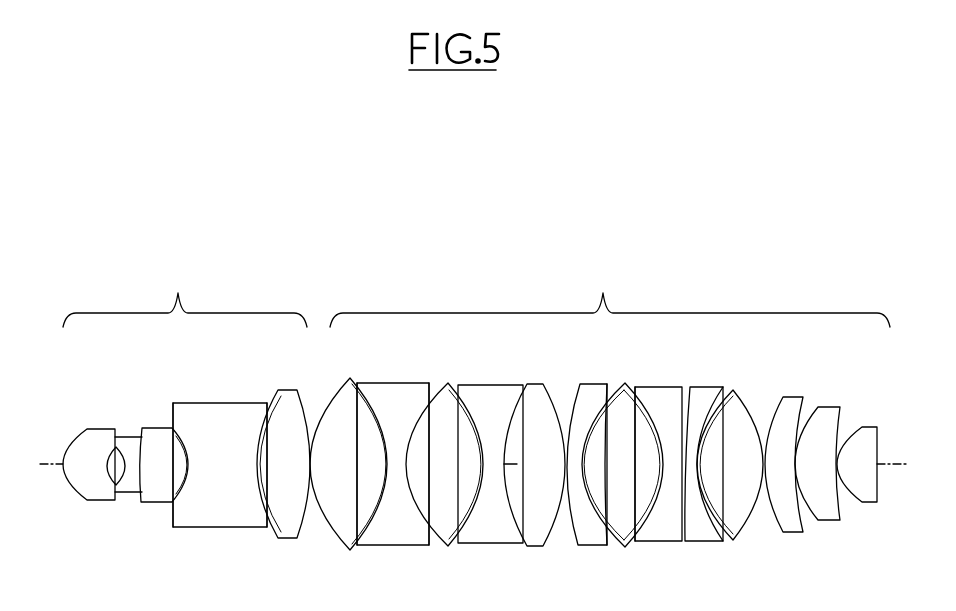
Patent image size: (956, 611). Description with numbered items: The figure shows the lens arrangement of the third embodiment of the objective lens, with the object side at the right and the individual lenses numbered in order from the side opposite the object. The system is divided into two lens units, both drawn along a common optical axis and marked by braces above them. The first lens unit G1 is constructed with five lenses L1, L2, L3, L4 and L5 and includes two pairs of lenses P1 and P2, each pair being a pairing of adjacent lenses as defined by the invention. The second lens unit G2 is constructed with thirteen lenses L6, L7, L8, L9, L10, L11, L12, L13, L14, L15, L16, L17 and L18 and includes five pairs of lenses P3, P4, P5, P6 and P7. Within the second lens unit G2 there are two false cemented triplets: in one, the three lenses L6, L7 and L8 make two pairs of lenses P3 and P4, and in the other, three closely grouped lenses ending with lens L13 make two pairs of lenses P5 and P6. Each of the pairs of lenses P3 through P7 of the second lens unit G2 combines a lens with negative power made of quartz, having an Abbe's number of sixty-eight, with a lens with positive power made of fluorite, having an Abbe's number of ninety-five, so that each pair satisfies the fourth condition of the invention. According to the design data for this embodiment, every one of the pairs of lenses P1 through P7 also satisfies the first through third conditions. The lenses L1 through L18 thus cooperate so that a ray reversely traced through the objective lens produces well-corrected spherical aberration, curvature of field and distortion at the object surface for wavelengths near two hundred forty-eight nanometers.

The first lens unit G1 is at (185, 297).
The second lens unit G2 is at (610, 297).
The lens L1 is at (82, 440).
The lens L2 is at (124, 442).
The lens L3 is at (153, 438).
The lens L4 is at (217, 412).
The lens L5 is at (287, 402).
The lens L6 is at (338, 400).
The lens L7 is at (395, 392).
The lens L8 is at (443, 393).
The lens L9 is at (493, 392).
The lens L10 is at (542, 397).
The lens L11 is at (592, 393).
The lens L12 is at (620, 393).
The lens L13 is at (662, 393).
The lens L14 is at (707, 395).
The lens L15 is at (742, 407).
The lens L16 is at (790, 400).
The lens L17 is at (828, 413).
The lens L18 is at (858, 437).
The pair of lenses P1 is at (170, 491).
The pair of lenses P2 is at (263, 491).
The pair of lenses P3 is at (360, 481).
The pair of lenses P4 is at (423, 481).
The pair of lenses P5 is at (602, 482).
The pair of lenses P6 is at (647, 483).
The pair of lenses P7 is at (720, 483).